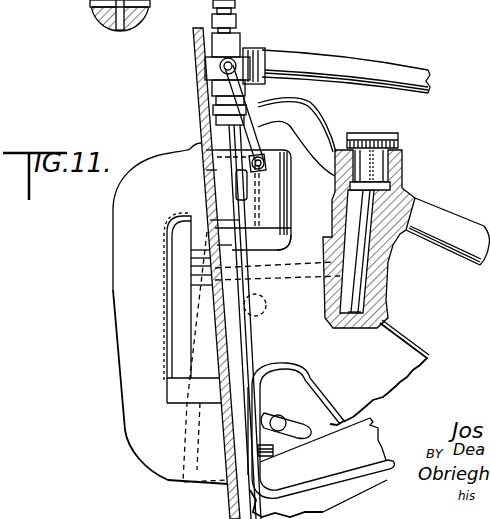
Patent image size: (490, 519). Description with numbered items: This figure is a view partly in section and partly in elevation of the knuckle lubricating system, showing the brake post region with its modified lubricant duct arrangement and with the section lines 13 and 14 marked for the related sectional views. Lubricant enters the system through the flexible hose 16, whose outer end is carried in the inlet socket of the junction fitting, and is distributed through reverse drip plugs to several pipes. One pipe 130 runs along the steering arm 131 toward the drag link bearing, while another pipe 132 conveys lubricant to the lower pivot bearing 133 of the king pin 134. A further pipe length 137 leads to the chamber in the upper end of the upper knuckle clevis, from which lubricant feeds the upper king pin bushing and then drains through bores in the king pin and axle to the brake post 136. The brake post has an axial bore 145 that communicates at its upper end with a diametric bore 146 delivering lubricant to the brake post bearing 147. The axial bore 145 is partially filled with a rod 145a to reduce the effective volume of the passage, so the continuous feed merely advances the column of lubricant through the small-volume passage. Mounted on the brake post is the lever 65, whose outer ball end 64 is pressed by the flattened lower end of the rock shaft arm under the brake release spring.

The section line 13— 13 is at (114, 420).
The section line 14— 14 is at (98, 256).
The flexible hose 16 is at (357, 66).
The outer ball end 64 is at (272, 66).
The lever 65 is at (322, 128).
The pipe 130 is at (252, 368).
The steering arm 131 is at (370, 460).
The pipe 132 is at (303, 423).
The lower pivot bearing 133 is at (190, 438).
The king pin 134 is at (276, 244).
The brake post 136 is at (386, 236).
The pipe length 137 is at (263, 122).
The axial bore 145 is at (366, 266).
The rod 145a is at (418, 200).
The diametric bore 146 is at (367, 210).
The brake post bearing 147 is at (338, 172).